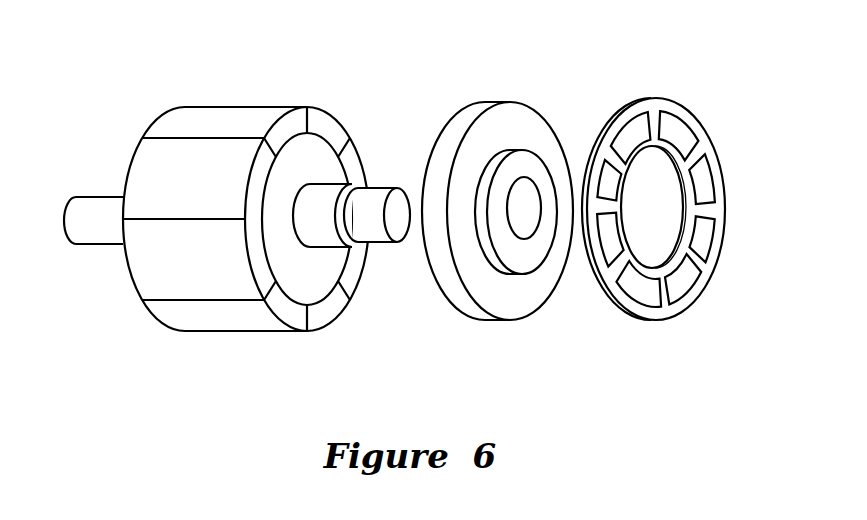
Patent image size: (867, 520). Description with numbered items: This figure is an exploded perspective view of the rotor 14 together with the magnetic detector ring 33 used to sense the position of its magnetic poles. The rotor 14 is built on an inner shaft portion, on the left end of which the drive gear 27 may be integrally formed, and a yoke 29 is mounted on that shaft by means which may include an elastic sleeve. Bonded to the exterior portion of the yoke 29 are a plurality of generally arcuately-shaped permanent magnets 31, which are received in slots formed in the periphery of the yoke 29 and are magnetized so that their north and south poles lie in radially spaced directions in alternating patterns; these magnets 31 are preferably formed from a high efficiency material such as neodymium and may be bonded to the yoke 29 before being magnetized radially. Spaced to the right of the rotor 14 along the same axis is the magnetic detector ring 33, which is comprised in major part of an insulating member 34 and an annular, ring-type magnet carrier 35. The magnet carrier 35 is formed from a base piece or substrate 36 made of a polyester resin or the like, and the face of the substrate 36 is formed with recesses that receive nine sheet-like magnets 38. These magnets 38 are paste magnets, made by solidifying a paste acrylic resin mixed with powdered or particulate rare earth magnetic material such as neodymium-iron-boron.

The rotor 14 is at (228, 222).
The drive gear 27 is at (101, 197).
The yoke 29 is at (317, 155).
The permanent magnets 31 is at (180, 313).
The magnetic detector ring 33 is at (599, 230).
The insulating member 34 is at (527, 317).
The magnet carrier 35 is at (679, 202).
The substrate 36 is at (668, 105).
The sheet like magnets 38 is at (678, 130).